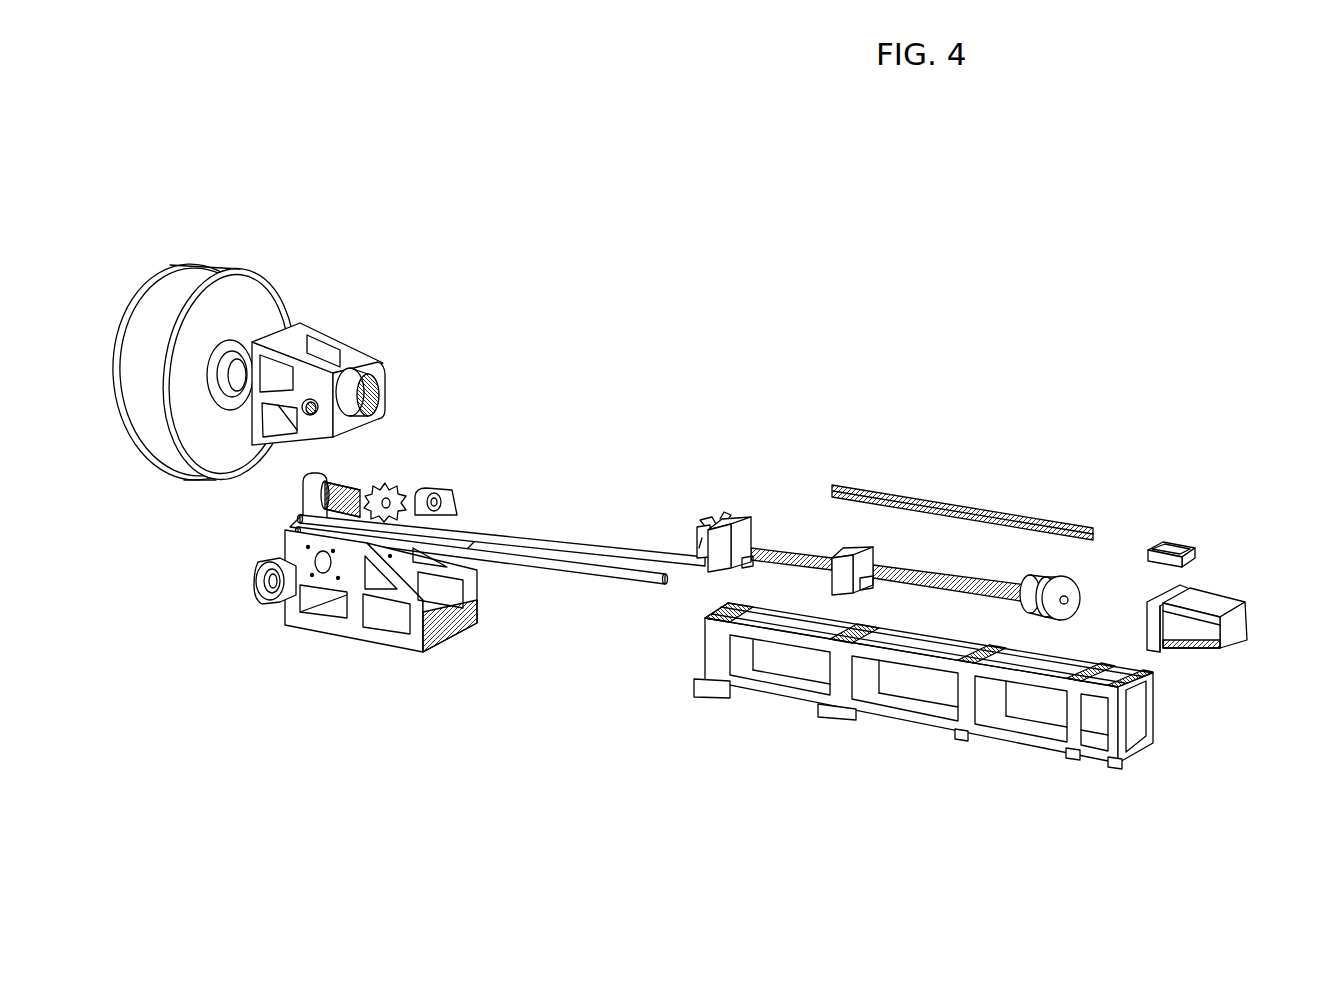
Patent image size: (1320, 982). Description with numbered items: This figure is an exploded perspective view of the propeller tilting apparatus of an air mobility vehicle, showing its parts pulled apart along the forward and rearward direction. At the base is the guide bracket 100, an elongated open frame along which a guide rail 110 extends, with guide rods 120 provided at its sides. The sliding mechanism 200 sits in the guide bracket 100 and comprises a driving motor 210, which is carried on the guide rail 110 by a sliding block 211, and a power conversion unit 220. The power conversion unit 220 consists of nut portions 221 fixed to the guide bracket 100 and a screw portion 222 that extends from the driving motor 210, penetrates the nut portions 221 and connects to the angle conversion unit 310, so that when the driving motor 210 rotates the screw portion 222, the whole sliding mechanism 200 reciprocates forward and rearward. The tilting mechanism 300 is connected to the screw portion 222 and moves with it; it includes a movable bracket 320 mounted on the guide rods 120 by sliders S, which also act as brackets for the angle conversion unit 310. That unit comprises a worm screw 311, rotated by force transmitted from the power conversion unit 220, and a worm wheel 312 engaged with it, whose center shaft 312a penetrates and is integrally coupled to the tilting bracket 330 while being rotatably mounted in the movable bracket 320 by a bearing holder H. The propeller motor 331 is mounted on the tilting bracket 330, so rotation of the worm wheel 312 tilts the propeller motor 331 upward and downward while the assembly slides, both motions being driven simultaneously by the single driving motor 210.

The guide bracket 100 is at (787, 722).
The guide rail 110 is at (1007, 517).
The guide rods 120 is at (577, 537).
The sliding mechanism 200 is at (1218, 612).
The driving motor 210 is at (1208, 602).
The sliding block 211 is at (1168, 543).
The power conversion unit 220 is at (888, 477).
The nut portions 221 is at (848, 548).
The screw portion 222 is at (905, 565).
The tilting mechanism 300 is at (406, 478).
The angle conversion unit 310 is at (452, 282).
The worm screw 311 is at (355, 478).
The worm wheel 312 is at (358, 380).
The center shaft 312a is at (292, 430).
The movable bracket 320 is at (355, 628).
The tilting bracket 330 is at (307, 398).
The propeller motor 331 is at (193, 278).
The sliders S is at (378, 480).
The bearing holder H is at (267, 603).